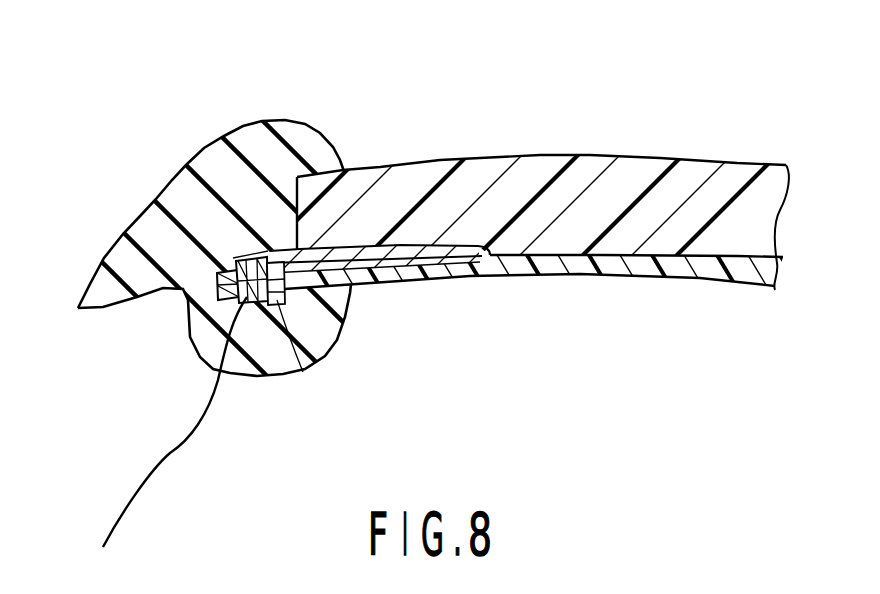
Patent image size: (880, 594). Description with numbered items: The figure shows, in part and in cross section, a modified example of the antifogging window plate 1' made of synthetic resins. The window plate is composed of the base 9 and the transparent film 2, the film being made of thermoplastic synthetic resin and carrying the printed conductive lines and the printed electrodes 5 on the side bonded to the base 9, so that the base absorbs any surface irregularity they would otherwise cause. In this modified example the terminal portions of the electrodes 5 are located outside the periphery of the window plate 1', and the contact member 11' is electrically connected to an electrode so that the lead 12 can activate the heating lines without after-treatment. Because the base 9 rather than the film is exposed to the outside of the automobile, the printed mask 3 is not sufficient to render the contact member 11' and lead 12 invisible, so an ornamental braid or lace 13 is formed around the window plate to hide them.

The window plate 1' is at (768, 177).
The transparent film 2 is at (710, 284).
The printed mask 3 is at (382, 243).
The electrode 5 is at (341, 277).
The base 9 is at (506, 158).
The contact member 11' is at (308, 338).
The lead 12 is at (170, 453).
The ornamental braid or lace 13 is at (287, 120).